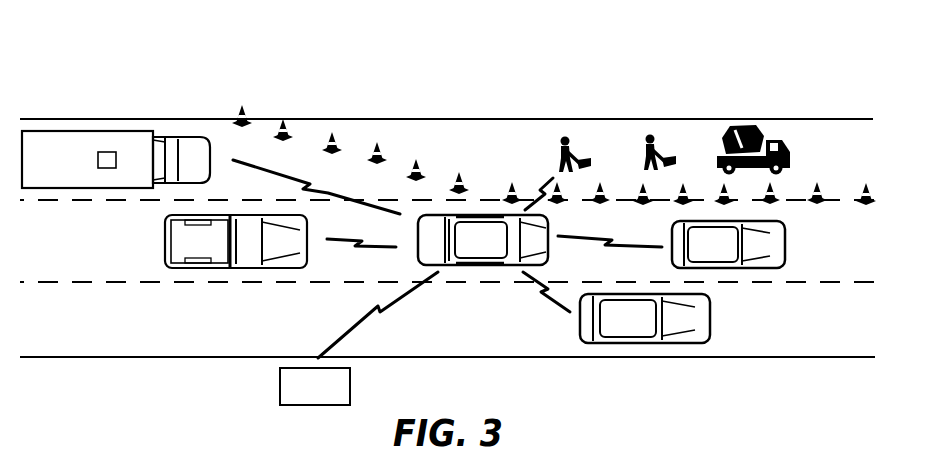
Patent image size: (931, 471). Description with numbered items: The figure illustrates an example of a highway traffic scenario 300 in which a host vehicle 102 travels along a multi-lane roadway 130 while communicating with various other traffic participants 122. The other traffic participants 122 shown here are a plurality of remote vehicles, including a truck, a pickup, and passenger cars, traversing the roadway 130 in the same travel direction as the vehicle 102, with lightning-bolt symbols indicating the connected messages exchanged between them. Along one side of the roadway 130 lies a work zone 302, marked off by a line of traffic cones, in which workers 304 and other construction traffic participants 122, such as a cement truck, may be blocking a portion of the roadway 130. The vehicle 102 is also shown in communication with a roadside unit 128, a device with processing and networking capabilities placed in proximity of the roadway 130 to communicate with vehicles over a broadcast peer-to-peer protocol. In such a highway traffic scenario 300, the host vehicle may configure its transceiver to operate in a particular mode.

The highway traffic scenario 300 is at (186, 49).
The vehicle 102 is at (462, 253).
The traffic participants 122 is at (42, 173).
The roadside unit 128 is at (294, 400).
The roadway 130 is at (137, 336).
The work zone 302 is at (454, 155).
The workers 304 is at (591, 159).